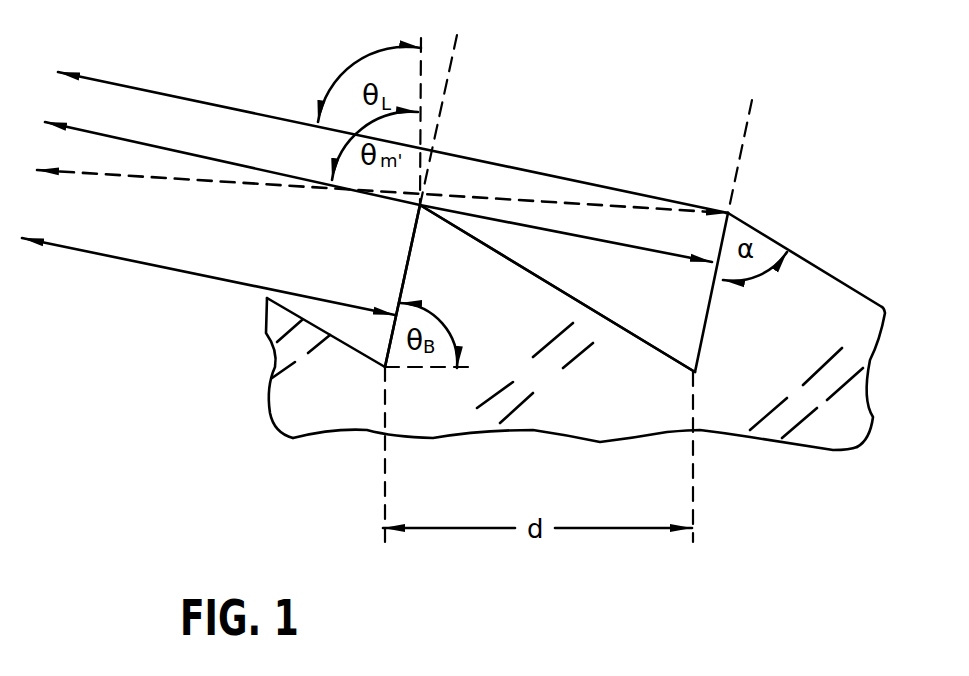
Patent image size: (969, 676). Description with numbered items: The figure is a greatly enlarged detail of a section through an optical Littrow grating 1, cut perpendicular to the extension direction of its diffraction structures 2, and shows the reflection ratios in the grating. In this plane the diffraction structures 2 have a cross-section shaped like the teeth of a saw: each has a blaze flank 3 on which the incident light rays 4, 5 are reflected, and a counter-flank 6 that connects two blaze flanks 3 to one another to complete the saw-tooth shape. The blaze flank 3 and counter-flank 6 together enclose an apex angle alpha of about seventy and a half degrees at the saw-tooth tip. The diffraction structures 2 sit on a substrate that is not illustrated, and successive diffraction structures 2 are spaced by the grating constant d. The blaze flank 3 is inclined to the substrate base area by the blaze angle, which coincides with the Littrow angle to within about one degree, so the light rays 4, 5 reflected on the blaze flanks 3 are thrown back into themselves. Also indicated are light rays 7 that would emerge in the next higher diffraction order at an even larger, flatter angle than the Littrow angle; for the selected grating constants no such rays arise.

The Littrow grating 1 is at (803, 198).
The diffraction structures 2 is at (527, 260).
The blaze flank 3 is at (412, 237).
The incident light ray 4 is at (120, 253).
The light rays 5 is at (137, 143).
The counter-flank 6 is at (660, 352).
The light rays 7 is at (196, 183).